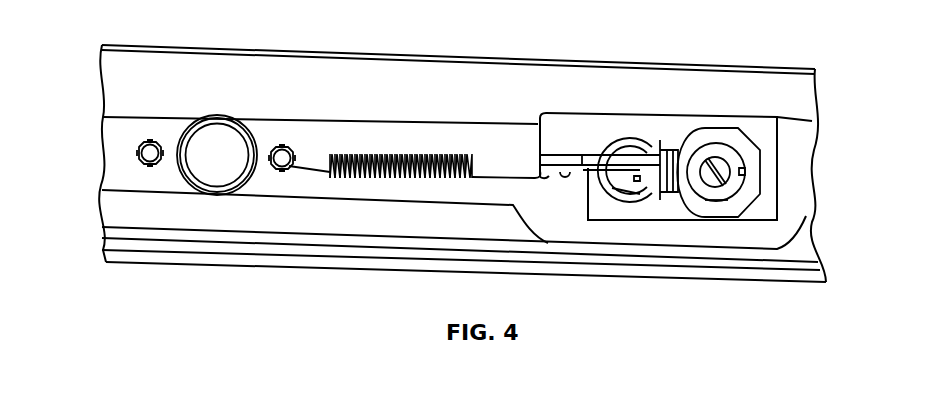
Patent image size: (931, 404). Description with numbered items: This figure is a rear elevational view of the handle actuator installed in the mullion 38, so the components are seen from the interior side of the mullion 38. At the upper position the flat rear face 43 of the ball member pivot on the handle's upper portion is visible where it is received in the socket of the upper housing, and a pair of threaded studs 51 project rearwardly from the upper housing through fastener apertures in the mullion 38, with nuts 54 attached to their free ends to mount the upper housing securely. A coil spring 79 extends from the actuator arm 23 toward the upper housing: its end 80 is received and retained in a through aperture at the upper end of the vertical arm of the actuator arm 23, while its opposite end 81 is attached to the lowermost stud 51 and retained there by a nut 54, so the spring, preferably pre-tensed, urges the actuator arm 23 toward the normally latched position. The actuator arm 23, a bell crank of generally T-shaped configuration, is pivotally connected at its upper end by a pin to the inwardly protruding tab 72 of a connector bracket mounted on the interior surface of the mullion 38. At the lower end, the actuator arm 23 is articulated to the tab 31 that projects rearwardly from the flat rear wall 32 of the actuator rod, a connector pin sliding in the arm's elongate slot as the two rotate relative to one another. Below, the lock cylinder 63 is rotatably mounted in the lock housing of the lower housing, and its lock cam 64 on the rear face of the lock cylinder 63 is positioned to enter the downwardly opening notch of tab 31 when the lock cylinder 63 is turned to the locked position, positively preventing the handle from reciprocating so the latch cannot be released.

The mullion 38 is at (337, 48).
The flat rear face 43 is at (213, 145).
The threaded studs 51 is at (151, 142).
The nuts 54 is at (140, 163).
The coil spring 79 is at (402, 152).
The spring end 80 is at (532, 173).
The opposite end of coil spring 81 is at (297, 177).
The inwardly protruding tab 72 is at (563, 152).
The actuator arm 23 is at (581, 182).
The tab 31 is at (635, 155).
The flat rear wall 32 is at (635, 188).
The lock cylinder 63 is at (728, 200).
The lock cam 64 is at (708, 143).